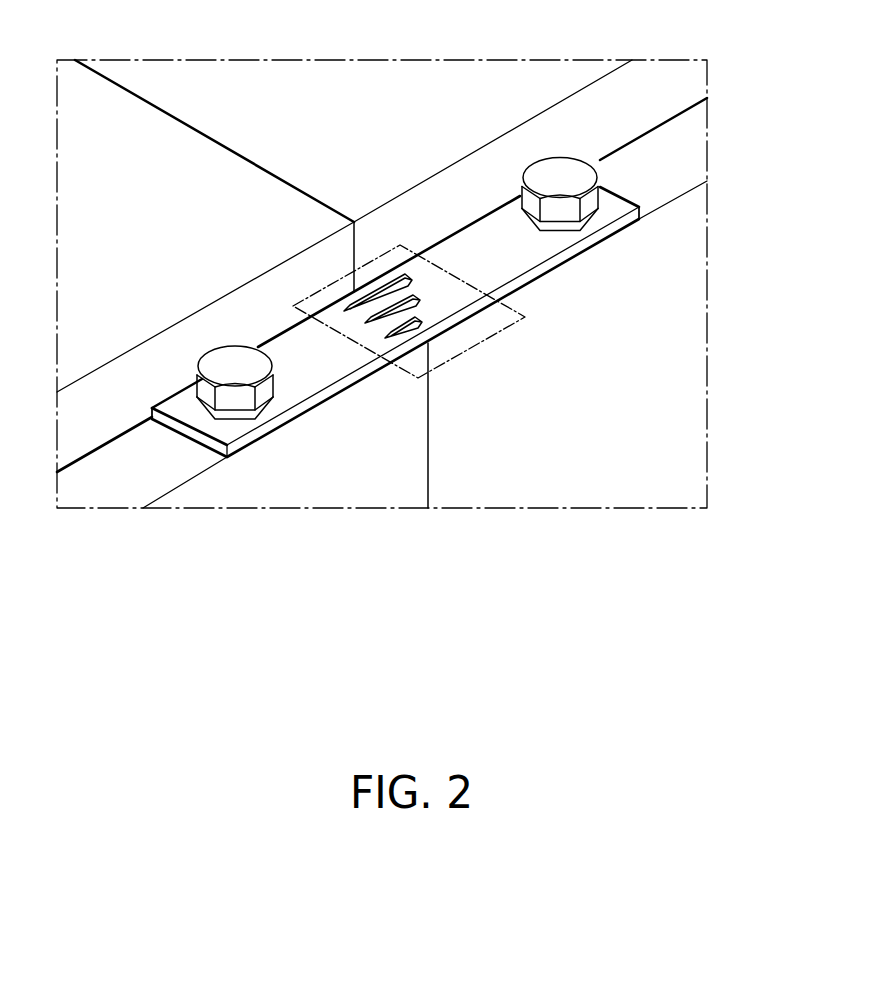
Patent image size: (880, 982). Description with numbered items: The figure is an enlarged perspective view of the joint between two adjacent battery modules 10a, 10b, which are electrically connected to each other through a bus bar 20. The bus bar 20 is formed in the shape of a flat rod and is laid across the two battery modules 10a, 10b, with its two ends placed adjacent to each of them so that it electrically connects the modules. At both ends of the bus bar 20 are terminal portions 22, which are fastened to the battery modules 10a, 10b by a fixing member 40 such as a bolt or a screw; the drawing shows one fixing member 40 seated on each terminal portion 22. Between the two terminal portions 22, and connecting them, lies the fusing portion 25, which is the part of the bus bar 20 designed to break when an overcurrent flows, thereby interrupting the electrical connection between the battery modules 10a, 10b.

The battery module 10a is at (293, 495).
The battery module 10b is at (568, 495).
The bus bar 20 is at (557, 266).
The terminal portion 22 is at (216, 430).
The fusing portion 25 is at (383, 253).
The fixing member 40 is at (569, 177).